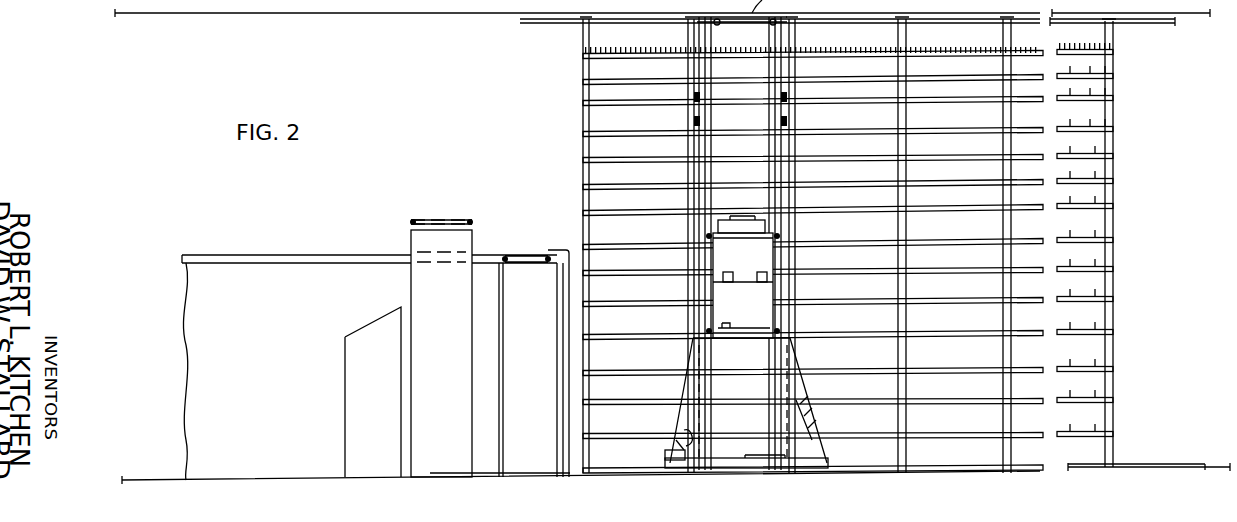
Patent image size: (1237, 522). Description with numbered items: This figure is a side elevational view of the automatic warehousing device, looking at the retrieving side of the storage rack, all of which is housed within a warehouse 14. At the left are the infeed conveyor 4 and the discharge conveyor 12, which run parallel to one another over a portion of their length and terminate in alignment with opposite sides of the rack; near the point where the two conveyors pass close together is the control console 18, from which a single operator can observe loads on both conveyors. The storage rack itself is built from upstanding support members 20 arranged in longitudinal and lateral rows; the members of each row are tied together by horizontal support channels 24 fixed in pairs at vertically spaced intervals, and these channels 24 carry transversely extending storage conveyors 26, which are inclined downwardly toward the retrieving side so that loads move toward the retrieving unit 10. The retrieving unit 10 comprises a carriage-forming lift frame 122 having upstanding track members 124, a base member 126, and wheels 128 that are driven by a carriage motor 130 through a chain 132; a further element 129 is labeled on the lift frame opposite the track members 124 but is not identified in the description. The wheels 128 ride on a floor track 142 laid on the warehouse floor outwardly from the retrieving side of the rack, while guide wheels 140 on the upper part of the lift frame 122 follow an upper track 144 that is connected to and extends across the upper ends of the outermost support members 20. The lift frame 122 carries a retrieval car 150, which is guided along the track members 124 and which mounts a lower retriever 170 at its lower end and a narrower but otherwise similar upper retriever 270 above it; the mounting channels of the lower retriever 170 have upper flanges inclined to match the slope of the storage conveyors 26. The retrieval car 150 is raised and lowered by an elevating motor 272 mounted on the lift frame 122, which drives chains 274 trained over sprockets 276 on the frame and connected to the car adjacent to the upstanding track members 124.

The infeed conveyor 4 is at (440, 218).
The retrieving unit 10 is at (838, 245).
The discharge conveyor 12 is at (282, 255).
The warehouse 14 is at (243, 478).
The control console 18 is at (382, 384).
The upstanding support member 20 is at (582, 116).
The horizontal support channel 24 is at (1113, 157).
The storage conveyor 26 is at (1108, 100).
The lift frame 122 is at (737, 235).
The upstanding track member 124 is at (790, 121).
The base member 126 is at (832, 449).
The wheel 128 is at (668, 462).
The guide roller 129 is at (702, 122).
The carriage motor 130 is at (690, 435).
The chain 132 is at (680, 443).
The guide wheel 140 is at (672, 28).
The floor track 142 is at (1172, 467).
The upper track 144 is at (1150, 22).
The retrieval car 150 is at (783, 260).
The lower retriever 170 is at (770, 327).
The upper retriever 270 is at (760, 223).
The elevating motor 272 is at (808, 430).
The chain 274 is at (700, 96).
The sprocket 276 is at (770, 25).